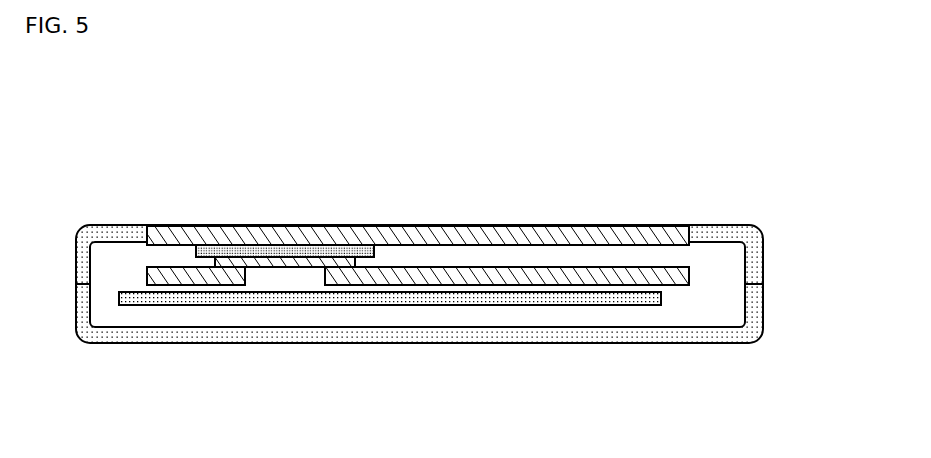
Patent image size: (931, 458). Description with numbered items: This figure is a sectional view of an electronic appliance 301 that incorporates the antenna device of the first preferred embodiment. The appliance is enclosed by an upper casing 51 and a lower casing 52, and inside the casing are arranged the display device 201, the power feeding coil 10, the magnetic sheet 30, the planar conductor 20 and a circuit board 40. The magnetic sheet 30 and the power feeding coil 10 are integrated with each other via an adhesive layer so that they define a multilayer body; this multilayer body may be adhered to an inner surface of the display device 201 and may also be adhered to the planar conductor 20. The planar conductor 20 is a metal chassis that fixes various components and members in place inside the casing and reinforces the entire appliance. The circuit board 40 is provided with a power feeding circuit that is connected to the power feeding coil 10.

The electronic appliance 301 is at (712, 142).
The upper casing 51 is at (750, 227).
The lower casing 52 is at (750, 335).
The display device 201 is at (418, 237).
The planar conductor 20 is at (533, 275).
The magnetic sheet 30 is at (293, 248).
The circuit board 40 is at (428, 298).
The power feeding coil 10 is at (418, 284).